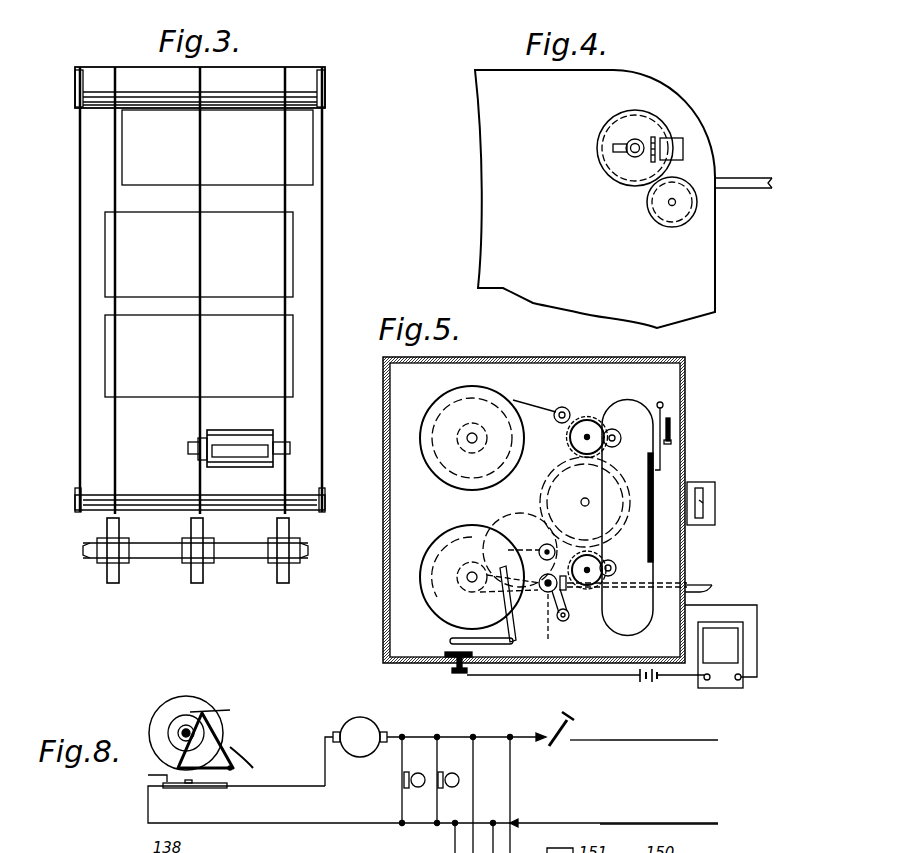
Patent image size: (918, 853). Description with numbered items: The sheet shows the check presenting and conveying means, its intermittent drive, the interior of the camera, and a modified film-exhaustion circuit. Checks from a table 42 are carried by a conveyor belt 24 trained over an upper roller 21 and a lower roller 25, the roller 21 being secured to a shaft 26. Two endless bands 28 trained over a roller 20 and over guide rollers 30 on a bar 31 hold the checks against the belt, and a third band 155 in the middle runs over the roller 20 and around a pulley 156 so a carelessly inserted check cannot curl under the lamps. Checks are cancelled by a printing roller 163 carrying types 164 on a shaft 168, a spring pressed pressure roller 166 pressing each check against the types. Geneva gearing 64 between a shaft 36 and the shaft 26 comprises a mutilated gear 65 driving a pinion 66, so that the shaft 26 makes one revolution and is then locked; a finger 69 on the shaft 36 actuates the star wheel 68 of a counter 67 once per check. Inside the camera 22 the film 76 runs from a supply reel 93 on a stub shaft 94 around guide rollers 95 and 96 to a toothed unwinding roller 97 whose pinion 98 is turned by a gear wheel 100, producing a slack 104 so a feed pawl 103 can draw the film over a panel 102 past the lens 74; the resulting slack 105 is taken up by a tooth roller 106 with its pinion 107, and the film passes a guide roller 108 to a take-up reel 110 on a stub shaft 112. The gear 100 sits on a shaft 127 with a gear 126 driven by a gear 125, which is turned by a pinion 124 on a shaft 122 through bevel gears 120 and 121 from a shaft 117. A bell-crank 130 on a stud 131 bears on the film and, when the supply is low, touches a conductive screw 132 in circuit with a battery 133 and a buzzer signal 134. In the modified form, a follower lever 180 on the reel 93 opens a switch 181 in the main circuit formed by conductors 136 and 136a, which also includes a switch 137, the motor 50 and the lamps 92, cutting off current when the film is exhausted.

In FIG. 3, the roller 20 is at (150, 72).
In FIG. 3, the roller 21 is at (76, 82).
In FIG. 3, the conveyor belt 24 is at (80, 191).
In FIG. 3, the roller 25 is at (75, 478).
In FIG. 3, the endless belt like bands 28 is at (116, 263).
In FIG. 3, the third band 155 is at (202, 238).
In FIG. 3, the printing roller 163 is at (243, 430).
In FIG. 3, the types 164 is at (229, 451).
In FIG. 3, the pressure roller 166 is at (197, 436).
In FIG. 3, the shaft 168 is at (188, 448).
In FIG. 3, the guide rollers 30 is at (106, 570).
In FIG. 3, the bar 31 is at (235, 558).
In FIG. 3, the pulley 156 is at (192, 572).
In FIG. 4, the Geneva gearing 64 is at (668, 110).
In FIG. 4, the mutilated gear 65 is at (613, 112).
In FIG. 4, the finger 69 is at (613, 146).
In FIG. 4, the shaft 36 is at (628, 156).
In FIG. 4, the counter 67 is at (684, 148).
In FIG. 4, the star wheel 68 is at (650, 162).
In FIG. 4, the pinion 66 is at (652, 215).
In FIG. 4, the shaft 26 is at (672, 206).
In FIG. 4, the table 42 is at (733, 188).
In FIG. 5, the camera 22 is at (525, 357).
In FIG. 5, the take-up reel 110 is at (432, 418).
In FIG. 5, the stub shaft 112 is at (470, 435).
In FIG. 5, the film 76 is at (434, 463).
In FIG. 8, the film 76 is at (173, 730).
In FIG. 5, the guide roller 108 is at (562, 407).
In FIG. 5, the pinion 107 is at (589, 417).
In FIG. 5, the tooth roller 106 is at (569, 437).
In FIG. 5, the slack 105 is at (631, 401).
In FIG. 5, the panel 102 is at (648, 480).
In FIG. 5, the feed pawl 103 is at (662, 461).
In FIG. 5, the slack 104 is at (677, 418).
In FIG. 5, the gear wheel 100 is at (540, 493).
In FIG. 5, the gear 126 is at (558, 474).
In FIG. 5, the shaft 127 is at (586, 498).
In FIG. 5, the gear 125 is at (503, 517).
In FIG. 5, the guide roller 95 is at (542, 546).
In FIG. 5, the supply reel 93 is at (428, 603).
In FIG. 8, the supply reel 93 is at (186, 700).
In FIG. 5, the stub shaft 94 is at (468, 571).
In FIG. 5, the bell-crank 130 is at (500, 598).
In FIG. 5, the shaft 122 is at (514, 624).
In FIG. 5, the bevel gear 121 is at (543, 591).
In FIG. 5, the pinion 124 is at (547, 624).
In FIG. 5, the bevel gear 120 is at (567, 604).
In FIG. 5, the guide roller 96 is at (566, 620).
In FIG. 5, the unwinding roller 97 is at (592, 578).
In FIG. 5, the pinion 98 is at (616, 563).
In FIG. 5, the shaft 117 is at (713, 590).
In FIG. 5, the lens 74 is at (715, 503).
In FIG. 5, the conductive screw 132 is at (458, 676).
In FIG. 5, the stud 131 is at (503, 640).
In FIG. 5, the battery 133 is at (637, 679).
In FIG. 5, the signal 134 is at (730, 645).
In FIG. 8, the follower lever 180 is at (225, 744).
In FIG. 8, the switch 181 is at (181, 789).
In FIG. 8, the motor 50 is at (360, 757).
In FIG. 8, the lamps 92 is at (422, 775).
In FIG. 8, the switch 137 is at (560, 748).
In FIG. 8, the conductor 136 is at (650, 740).
In FIG. 8, the conductor 136a is at (640, 824).